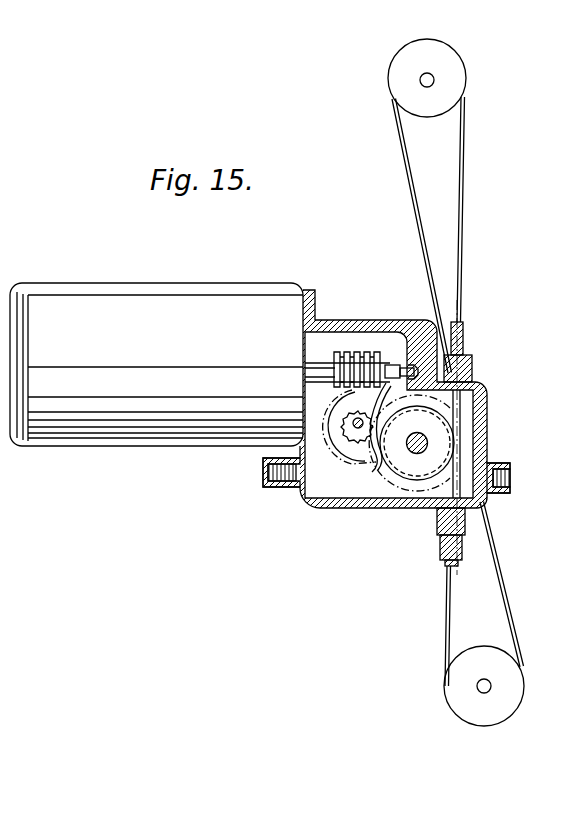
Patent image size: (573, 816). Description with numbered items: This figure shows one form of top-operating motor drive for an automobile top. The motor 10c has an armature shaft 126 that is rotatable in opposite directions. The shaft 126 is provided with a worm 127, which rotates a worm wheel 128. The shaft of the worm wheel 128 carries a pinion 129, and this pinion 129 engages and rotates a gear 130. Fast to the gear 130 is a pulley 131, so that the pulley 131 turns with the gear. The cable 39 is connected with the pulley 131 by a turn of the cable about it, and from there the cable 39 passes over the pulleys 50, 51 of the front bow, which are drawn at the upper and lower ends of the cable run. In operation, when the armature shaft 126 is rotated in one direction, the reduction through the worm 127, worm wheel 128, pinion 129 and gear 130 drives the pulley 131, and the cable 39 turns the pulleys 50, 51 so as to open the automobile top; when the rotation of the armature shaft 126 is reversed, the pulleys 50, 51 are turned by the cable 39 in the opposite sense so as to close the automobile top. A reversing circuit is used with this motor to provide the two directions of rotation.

The motor 10c is at (156, 364).
The armature shaft 126 is at (322, 357).
The worm 127 is at (368, 355).
The worm wheel 128 is at (330, 386).
The pinion 129 is at (357, 432).
The gear 130 is at (373, 450).
The pulley 131 is at (438, 438).
The cable 39 is at (463, 196).
The pulley 51 is at (427, 78).
The pulley 50 is at (484, 686).